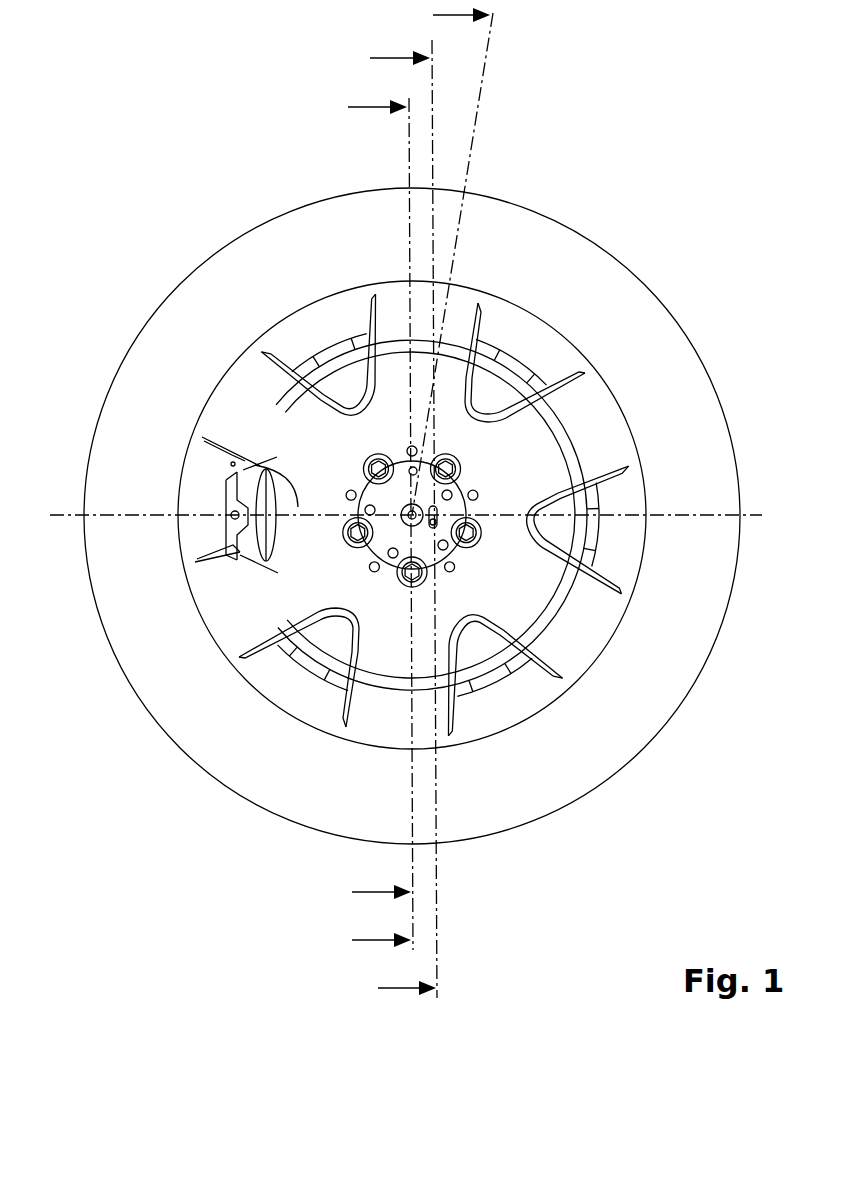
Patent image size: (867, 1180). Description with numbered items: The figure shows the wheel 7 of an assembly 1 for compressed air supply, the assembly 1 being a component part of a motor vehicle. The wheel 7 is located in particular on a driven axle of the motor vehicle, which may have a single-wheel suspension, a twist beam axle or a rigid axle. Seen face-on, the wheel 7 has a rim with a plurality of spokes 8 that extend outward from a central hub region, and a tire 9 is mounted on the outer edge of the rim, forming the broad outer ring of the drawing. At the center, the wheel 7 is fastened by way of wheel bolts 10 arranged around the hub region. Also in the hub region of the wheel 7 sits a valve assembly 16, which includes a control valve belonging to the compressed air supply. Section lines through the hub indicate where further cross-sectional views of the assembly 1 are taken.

The assembly 1 is at (170, 150).
The wheel 7 is at (672, 287).
The spokes 8 is at (511, 405).
The tire 9 is at (677, 408).
The wheel bolts 10 is at (355, 542).
The valve assembly 16 is at (385, 500).